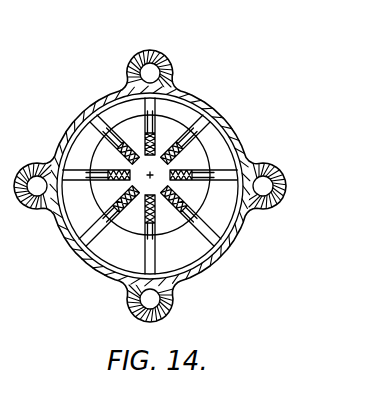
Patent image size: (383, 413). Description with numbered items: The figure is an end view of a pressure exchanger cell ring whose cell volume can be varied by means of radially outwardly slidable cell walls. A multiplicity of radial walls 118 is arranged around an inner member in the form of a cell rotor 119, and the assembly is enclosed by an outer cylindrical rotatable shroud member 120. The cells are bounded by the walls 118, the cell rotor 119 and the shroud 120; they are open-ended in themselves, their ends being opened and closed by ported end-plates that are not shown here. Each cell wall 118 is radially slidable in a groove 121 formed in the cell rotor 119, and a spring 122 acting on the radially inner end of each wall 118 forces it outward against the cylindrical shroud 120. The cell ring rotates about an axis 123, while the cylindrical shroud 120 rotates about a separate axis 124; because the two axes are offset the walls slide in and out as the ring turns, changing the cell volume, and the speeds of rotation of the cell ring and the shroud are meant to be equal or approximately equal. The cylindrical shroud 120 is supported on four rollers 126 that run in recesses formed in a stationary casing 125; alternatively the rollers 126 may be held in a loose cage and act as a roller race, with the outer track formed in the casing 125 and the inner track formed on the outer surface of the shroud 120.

The radial walls 118 is at (208, 130).
The cell rotor 119 is at (128, 137).
The cylindrical rotatable shroud member 120 is at (240, 144).
The grooves 121 is at (192, 181).
The springs 122 is at (174, 210).
The axis 123 is at (148, 174).
The axis 124 is at (147, 188).
The stationary casing 125 is at (228, 263).
The rollers 126 is at (152, 68).